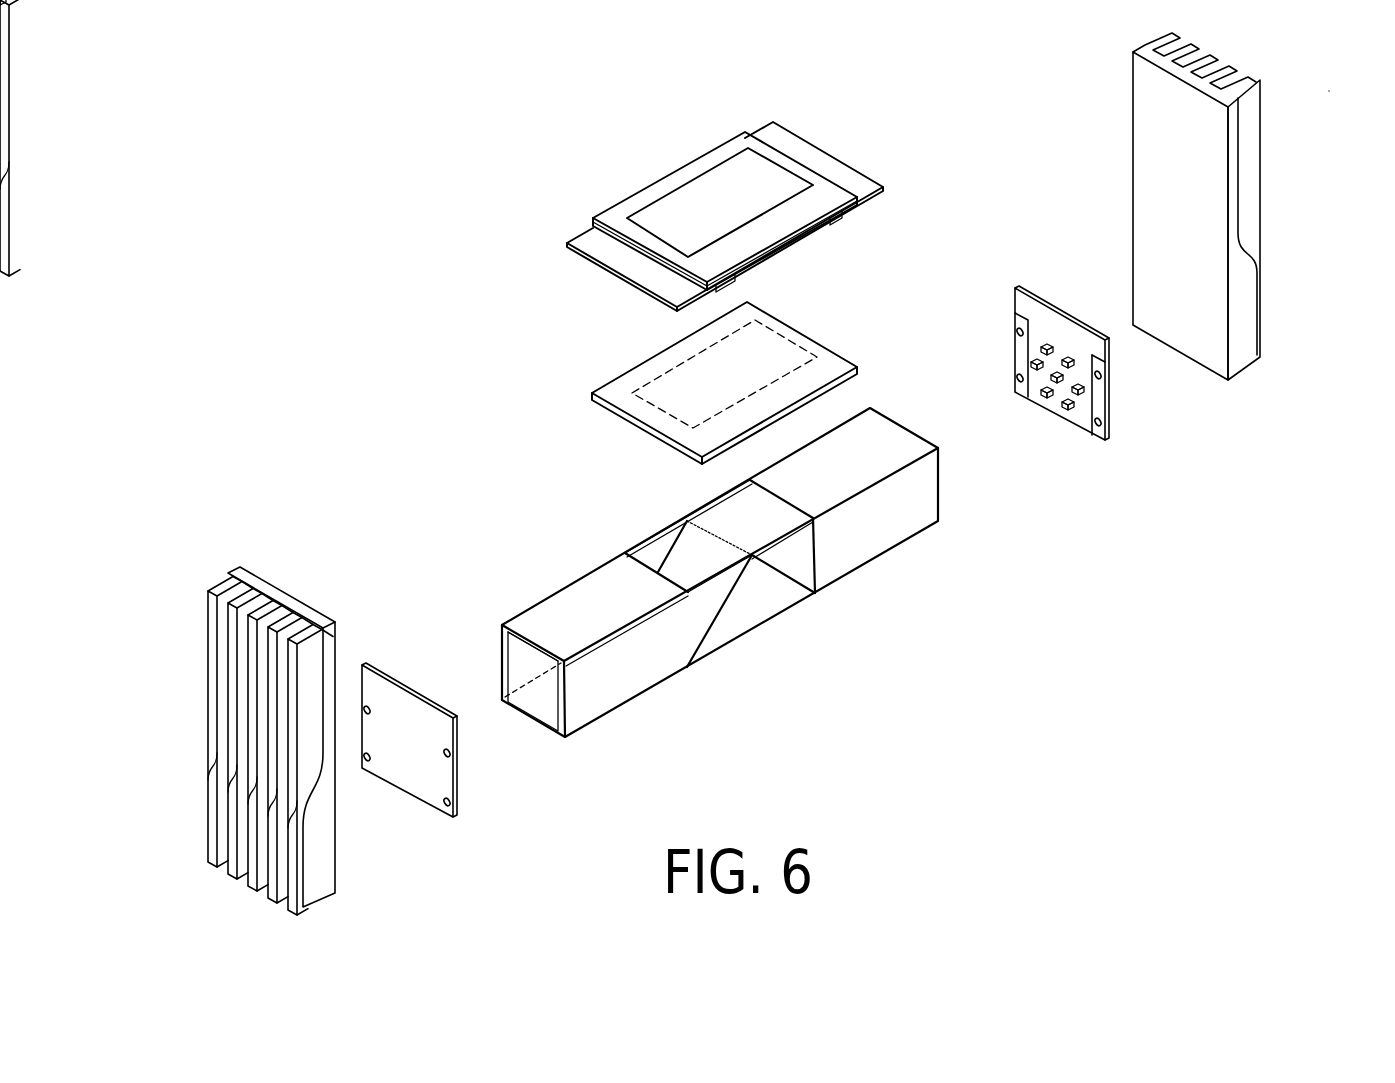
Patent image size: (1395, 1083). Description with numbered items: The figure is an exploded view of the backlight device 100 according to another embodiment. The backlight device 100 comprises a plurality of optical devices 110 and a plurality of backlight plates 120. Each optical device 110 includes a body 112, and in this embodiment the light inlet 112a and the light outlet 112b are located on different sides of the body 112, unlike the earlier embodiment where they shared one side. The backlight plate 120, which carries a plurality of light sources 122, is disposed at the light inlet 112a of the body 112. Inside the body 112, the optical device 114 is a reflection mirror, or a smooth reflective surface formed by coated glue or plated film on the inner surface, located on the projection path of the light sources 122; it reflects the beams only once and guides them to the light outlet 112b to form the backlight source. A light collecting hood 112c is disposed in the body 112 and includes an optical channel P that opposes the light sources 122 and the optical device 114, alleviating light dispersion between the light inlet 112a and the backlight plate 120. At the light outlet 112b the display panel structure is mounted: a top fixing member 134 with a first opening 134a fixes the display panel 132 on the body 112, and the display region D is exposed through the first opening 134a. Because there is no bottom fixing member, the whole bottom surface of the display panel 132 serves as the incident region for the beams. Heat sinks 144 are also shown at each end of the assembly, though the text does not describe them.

The backlight device 100 is at (1382, 91).
The optical device 110 is at (666, 614).
The body 112 is at (845, 563).
The light inlet 112a is at (477, 648).
The light outlet 112b is at (640, 525).
The light collecting hood 112c is at (522, 655).
The optical device 114 is at (732, 537).
The backlight plate 120 is at (591, 425).
The light source 122 is at (1041, 351).
The display panel 132 is at (677, 381).
The top fixing member 134 is at (699, 216).
The first opening 134a is at (708, 207).
The heat sink 144 is at (1262, 153).
The display region D is at (655, 378).
The optical channel P is at (528, 685).